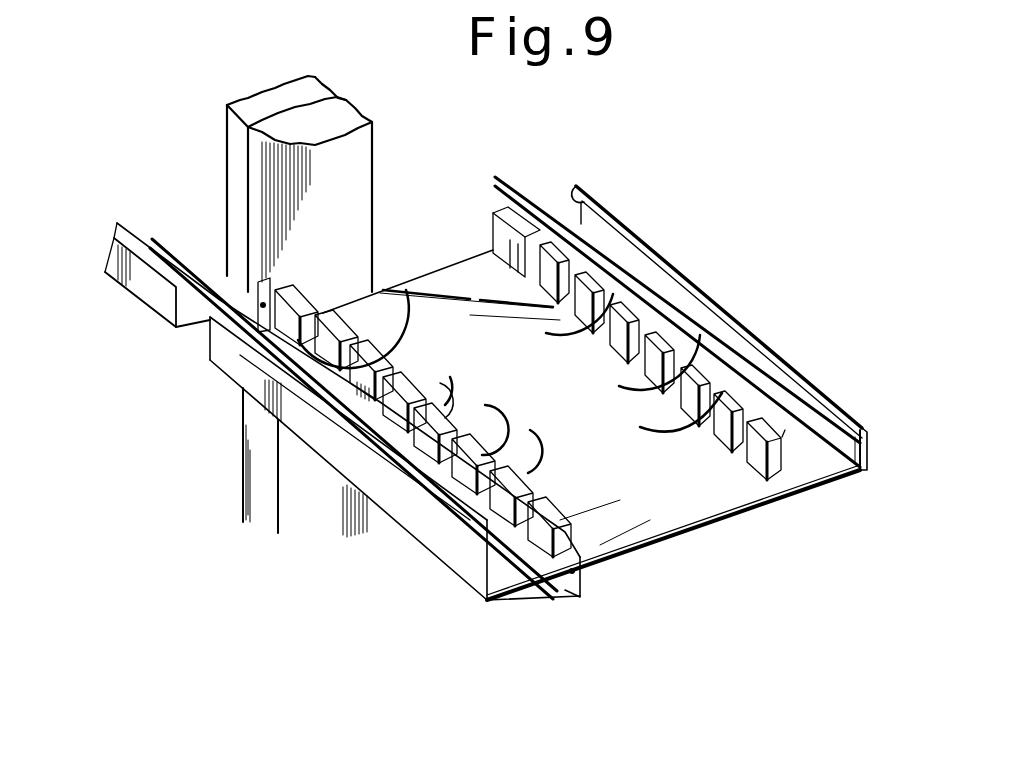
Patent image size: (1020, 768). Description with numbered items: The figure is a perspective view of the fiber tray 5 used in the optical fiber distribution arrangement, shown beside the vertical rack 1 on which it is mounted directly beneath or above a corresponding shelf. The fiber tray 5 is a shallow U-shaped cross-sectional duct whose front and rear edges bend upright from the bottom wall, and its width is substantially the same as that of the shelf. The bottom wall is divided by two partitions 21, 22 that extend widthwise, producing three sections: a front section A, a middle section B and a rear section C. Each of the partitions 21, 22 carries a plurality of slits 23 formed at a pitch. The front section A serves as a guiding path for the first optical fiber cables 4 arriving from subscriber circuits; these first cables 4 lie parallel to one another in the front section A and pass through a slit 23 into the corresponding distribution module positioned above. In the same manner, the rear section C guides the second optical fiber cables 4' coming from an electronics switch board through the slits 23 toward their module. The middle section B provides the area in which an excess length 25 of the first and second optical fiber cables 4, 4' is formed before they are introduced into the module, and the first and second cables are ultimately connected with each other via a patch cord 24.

The vertical rack 1 is at (232, 169).
The first optical fiber cable 4 is at (342, 437).
The second optical fiber cable 4' is at (676, 322).
The fiber tray 5 is at (680, 250).
The partition 21 is at (567, 513).
The partition 22 is at (782, 436).
The slit 23 is at (723, 372).
The patch cord 24 is at (503, 522).
The excess length 25 is at (400, 410).
The front section A is at (537, 600).
The middle section B is at (693, 539).
The rear section C is at (822, 490).